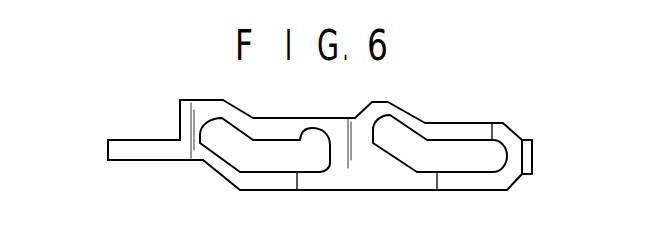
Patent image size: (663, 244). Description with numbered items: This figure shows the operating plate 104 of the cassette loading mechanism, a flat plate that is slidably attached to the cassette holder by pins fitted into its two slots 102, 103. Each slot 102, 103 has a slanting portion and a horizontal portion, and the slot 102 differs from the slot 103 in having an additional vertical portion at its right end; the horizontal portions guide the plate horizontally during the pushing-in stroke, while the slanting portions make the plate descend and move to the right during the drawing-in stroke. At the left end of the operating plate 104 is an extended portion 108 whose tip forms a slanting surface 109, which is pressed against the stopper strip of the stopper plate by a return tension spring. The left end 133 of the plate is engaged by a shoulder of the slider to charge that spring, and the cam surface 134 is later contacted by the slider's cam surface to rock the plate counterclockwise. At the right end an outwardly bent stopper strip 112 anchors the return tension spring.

The slot 102 is at (280, 163).
The slot 103 is at (462, 162).
The operating plate 104 is at (368, 178).
The extended portion 108 is at (153, 160).
The slanting surface 109 is at (108, 142).
The stopper strip 112 is at (533, 158).
The left end 133 is at (180, 120).
The cam surface 134 is at (247, 113).